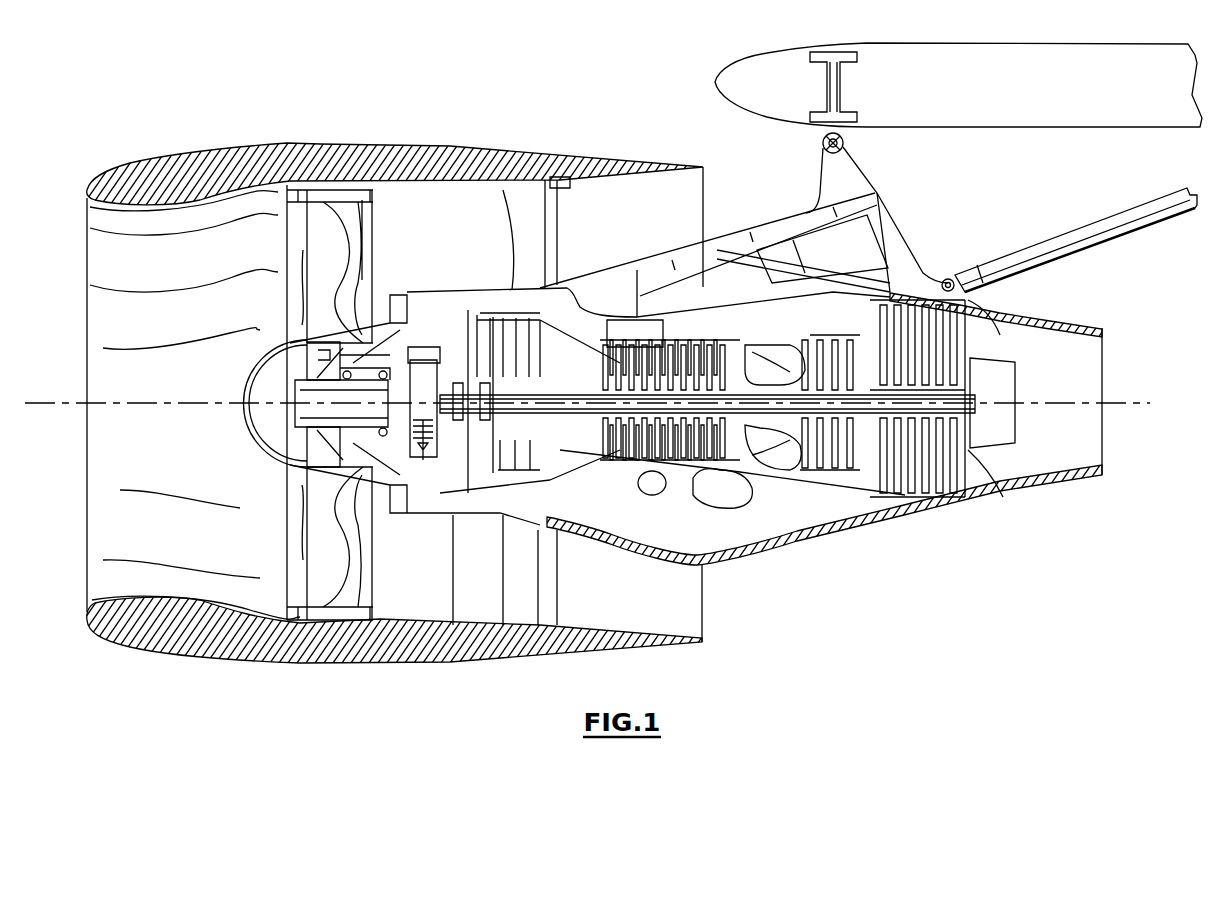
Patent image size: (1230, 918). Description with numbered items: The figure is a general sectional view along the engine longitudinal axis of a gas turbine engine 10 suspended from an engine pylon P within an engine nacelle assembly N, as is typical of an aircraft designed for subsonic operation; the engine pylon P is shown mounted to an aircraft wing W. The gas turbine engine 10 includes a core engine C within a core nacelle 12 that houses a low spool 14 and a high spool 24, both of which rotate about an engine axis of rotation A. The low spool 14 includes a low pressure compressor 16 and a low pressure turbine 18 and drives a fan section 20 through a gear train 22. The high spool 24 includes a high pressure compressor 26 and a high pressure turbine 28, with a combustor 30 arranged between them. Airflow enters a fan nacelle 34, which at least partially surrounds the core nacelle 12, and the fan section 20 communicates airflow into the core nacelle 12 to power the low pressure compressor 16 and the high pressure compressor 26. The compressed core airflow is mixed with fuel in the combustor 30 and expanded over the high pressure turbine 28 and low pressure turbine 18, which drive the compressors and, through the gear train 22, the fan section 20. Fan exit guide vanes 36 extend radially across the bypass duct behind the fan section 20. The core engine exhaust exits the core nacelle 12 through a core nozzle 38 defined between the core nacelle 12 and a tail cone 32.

The gas turbine engine 10 is at (338, 83).
The core nacelle 12 is at (824, 455).
The low spool 14 is at (553, 421).
The low pressure compressor 16 is at (504, 312).
The low pressure turbine 18 is at (938, 326).
The fan section 20 is at (330, 220).
The gear train 22 is at (388, 445).
The high spool 24 is at (796, 424).
The high pressure compressor 26 is at (690, 340).
The high pressure turbine 28 is at (854, 490).
The combustor 30 is at (744, 343).
The tail cone 32 is at (1008, 378).
The fan nacelle 34 is at (155, 628).
The fan exit guide vanes 36 is at (525, 596).
The core nozzle 38 is at (1085, 374).
The engine nacelle assembly N is at (395, 392).
The engine pylon P is at (910, 182).
The aircraft wing W is at (1032, 80).
The engine axis of rotation A is at (1151, 406).
The core engine C is at (791, 553).